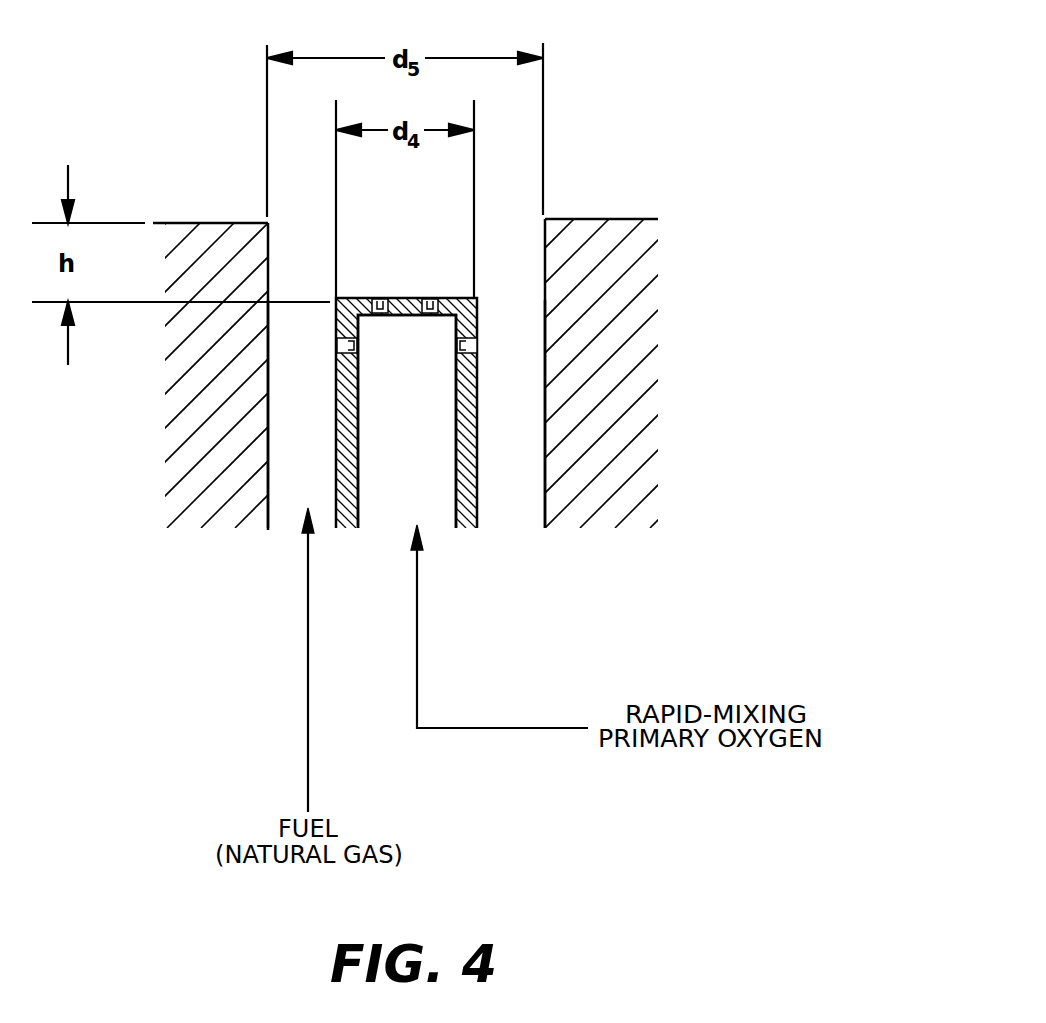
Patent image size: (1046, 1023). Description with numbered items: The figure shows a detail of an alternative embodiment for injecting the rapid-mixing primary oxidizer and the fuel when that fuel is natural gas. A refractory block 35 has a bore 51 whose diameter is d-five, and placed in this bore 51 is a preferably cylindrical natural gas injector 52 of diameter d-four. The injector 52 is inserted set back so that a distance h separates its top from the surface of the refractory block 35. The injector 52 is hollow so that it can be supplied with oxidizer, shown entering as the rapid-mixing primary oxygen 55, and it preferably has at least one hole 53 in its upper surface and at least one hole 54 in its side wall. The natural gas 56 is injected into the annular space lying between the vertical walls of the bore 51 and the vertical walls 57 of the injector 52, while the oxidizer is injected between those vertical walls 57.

The refractory block 35 is at (218, 236).
The bore 51 is at (297, 429).
The natural gas injector 52 is at (422, 483).
The hole 53 is at (431, 298).
The hole 54 is at (335, 348).
The rapid-mixing primary oxygen flow 55 is at (417, 633).
The natural gas 56 is at (308, 628).
The vertical walls 57 is at (357, 478).